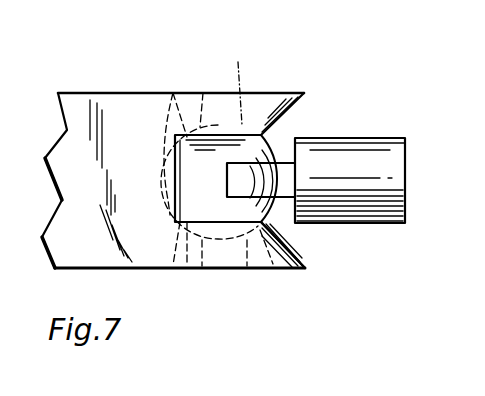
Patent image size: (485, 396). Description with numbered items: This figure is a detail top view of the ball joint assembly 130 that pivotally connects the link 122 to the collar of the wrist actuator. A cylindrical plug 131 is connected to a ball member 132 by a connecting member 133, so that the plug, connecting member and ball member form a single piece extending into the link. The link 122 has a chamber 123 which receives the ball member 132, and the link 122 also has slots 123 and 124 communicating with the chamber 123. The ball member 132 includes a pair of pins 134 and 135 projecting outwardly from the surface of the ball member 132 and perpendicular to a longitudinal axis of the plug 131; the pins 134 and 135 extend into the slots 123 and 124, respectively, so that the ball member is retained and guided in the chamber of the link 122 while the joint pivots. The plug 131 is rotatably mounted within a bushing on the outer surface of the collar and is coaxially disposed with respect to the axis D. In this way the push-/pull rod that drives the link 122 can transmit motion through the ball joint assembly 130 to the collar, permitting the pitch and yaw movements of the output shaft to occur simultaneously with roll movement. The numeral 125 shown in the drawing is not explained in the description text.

The link 122 is at (98, 258).
The chamber 123 is at (187, 270).
The slot 124 is at (188, 122).
The socket recess with chamfered entrance 125 is at (183, 165).
The ball joint assembly 130 is at (312, 132).
The cylindrical plug 131 is at (395, 187).
The ball member 132 is at (283, 224).
The connecting member 133 is at (277, 192).
The pin 134 is at (224, 268).
The pin 135 is at (243, 84).